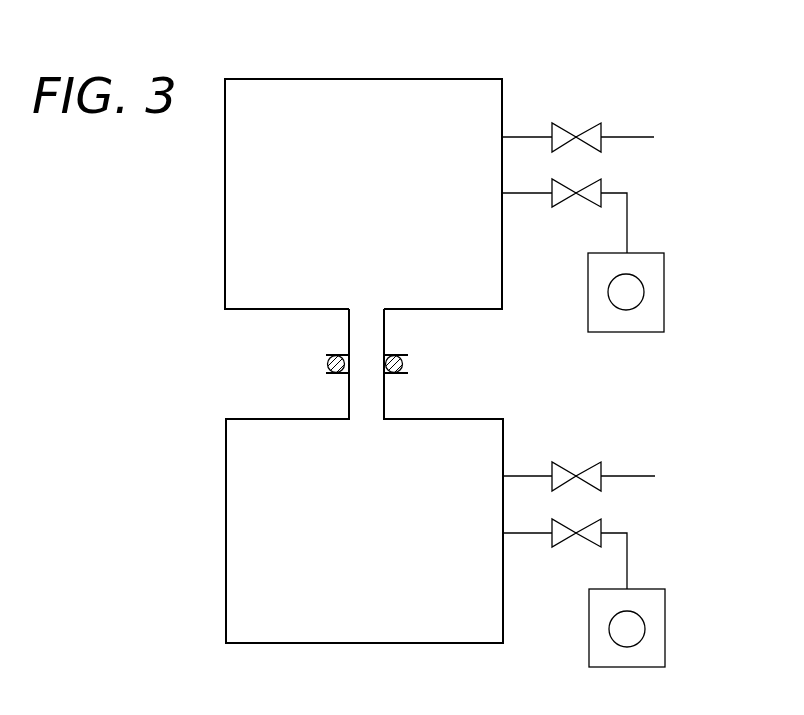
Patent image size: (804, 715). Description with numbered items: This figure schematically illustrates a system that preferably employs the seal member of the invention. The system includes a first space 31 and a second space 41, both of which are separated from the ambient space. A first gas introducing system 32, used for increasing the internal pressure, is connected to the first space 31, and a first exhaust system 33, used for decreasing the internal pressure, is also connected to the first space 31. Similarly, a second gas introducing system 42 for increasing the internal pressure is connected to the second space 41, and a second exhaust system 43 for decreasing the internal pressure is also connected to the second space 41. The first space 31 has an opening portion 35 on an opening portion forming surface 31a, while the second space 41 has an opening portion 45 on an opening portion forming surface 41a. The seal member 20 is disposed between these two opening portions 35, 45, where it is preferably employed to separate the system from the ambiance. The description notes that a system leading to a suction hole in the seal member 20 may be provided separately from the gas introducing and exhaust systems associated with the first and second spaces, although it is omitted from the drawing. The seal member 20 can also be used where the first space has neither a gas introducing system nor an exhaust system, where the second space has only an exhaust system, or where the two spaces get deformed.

The first space 31 is at (470, 98).
The second space 41 is at (470, 622).
The opening portion 35 is at (365, 348).
The opening portion 45 is at (365, 380).
The seal member 20 is at (342, 355).
The opening portion forming surface 41a is at (326, 369).
The opening portion forming surface 31a is at (408, 362).
The first gas introducing system 32 is at (627, 136).
The first exhaust system 33 is at (650, 258).
The second gas introducing system 42 is at (627, 475).
The second exhaust system 43 is at (650, 594).